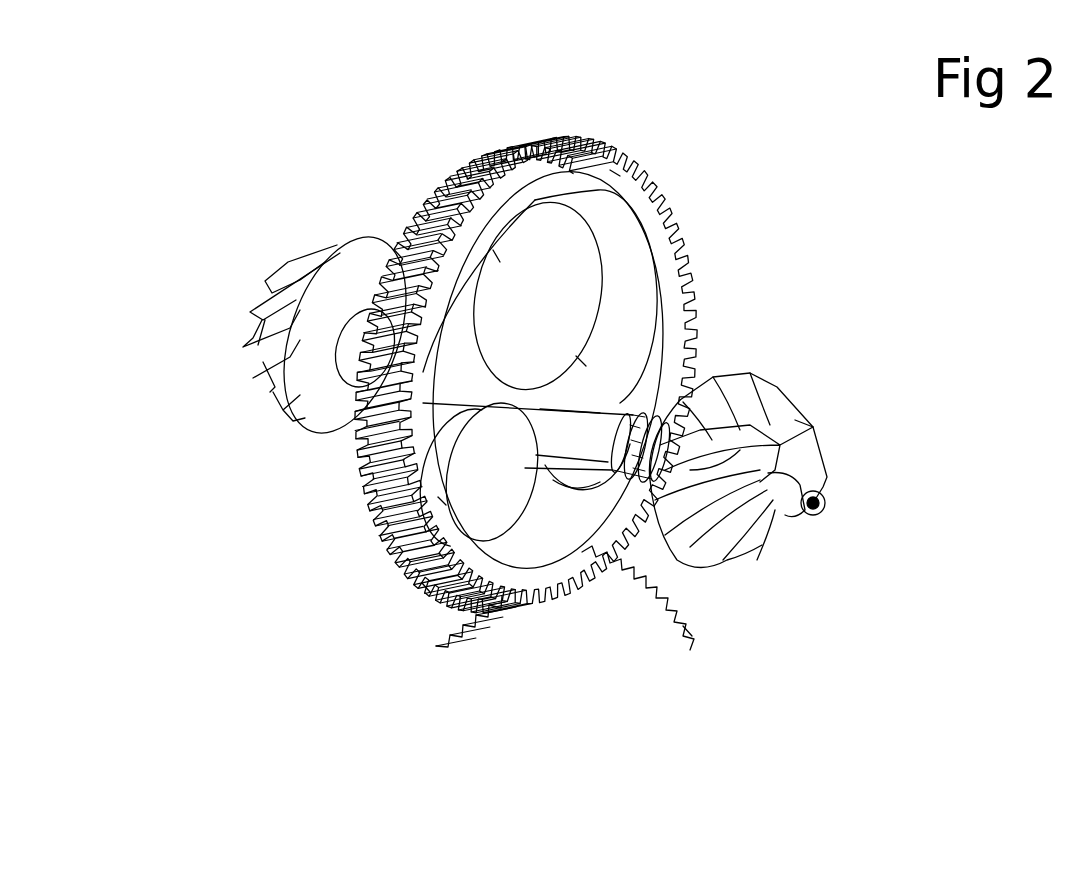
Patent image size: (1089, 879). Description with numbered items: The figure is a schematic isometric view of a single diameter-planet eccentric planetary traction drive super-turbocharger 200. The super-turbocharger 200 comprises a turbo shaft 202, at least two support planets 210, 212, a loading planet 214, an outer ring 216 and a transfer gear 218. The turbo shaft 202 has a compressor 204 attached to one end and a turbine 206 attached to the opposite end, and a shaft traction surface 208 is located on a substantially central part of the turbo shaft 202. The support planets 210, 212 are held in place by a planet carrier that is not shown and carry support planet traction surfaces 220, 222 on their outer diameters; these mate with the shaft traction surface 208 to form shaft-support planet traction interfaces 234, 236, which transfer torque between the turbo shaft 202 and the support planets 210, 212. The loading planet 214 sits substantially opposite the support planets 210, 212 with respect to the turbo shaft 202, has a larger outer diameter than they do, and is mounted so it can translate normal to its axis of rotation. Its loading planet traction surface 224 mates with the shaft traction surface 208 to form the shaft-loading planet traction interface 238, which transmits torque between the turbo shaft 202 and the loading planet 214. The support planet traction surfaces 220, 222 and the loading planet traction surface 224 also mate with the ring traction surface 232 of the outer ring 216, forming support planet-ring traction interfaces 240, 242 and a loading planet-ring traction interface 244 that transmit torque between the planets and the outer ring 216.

The eccentric planetary traction drive super-turbocharger 200 is at (198, 162).
The turbo shaft 202 is at (780, 530).
The compressor 204 is at (790, 443).
The turbine 206 is at (347, 277).
The shaft traction surface 208 is at (573, 317).
The support planet 210 is at (490, 552).
The support planet 212 is at (580, 470).
The loading planet 214 is at (553, 200).
The outer ring 216 is at (417, 480).
The transfer gear 218 is at (497, 633).
The support planet traction surface 220 is at (440, 448).
The support planet traction surface 222 is at (545, 470).
The loading planet traction surface 224 is at (523, 260).
The ring traction surface 232 is at (680, 327).
The shaft-support planet traction interface 234 is at (440, 500).
The shaft-support planet traction interface 236 is at (580, 360).
The shaft-loading planet traction interface 238 is at (495, 255).
The support planet-ring traction interface 240 is at (425, 587).
The support planet-ring traction interface 242 is at (687, 630).
The loading planet-ring traction interface 244 is at (615, 172).